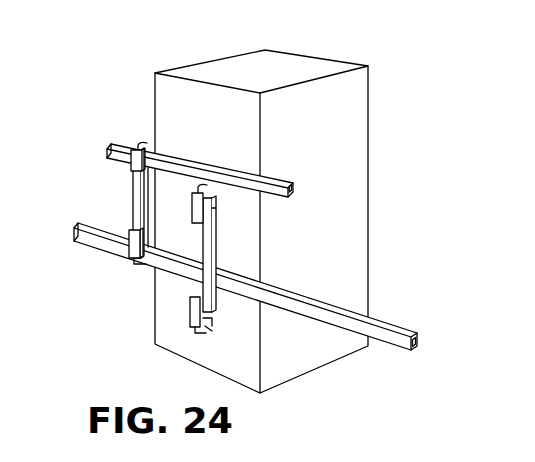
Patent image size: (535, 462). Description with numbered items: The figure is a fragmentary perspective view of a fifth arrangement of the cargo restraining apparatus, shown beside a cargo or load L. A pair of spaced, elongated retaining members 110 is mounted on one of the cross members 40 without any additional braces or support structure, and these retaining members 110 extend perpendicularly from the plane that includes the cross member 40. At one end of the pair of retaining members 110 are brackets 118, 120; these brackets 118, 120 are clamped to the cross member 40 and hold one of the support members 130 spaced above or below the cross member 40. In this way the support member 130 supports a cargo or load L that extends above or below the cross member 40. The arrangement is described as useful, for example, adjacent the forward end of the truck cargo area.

The load L is at (277, 68).
The support member 130 is at (198, 157).
The cross member 40 is at (410, 353).
The retaining member 110 is at (132, 191).
The bracket 120 is at (135, 143).
The bracket 118 is at (135, 262).